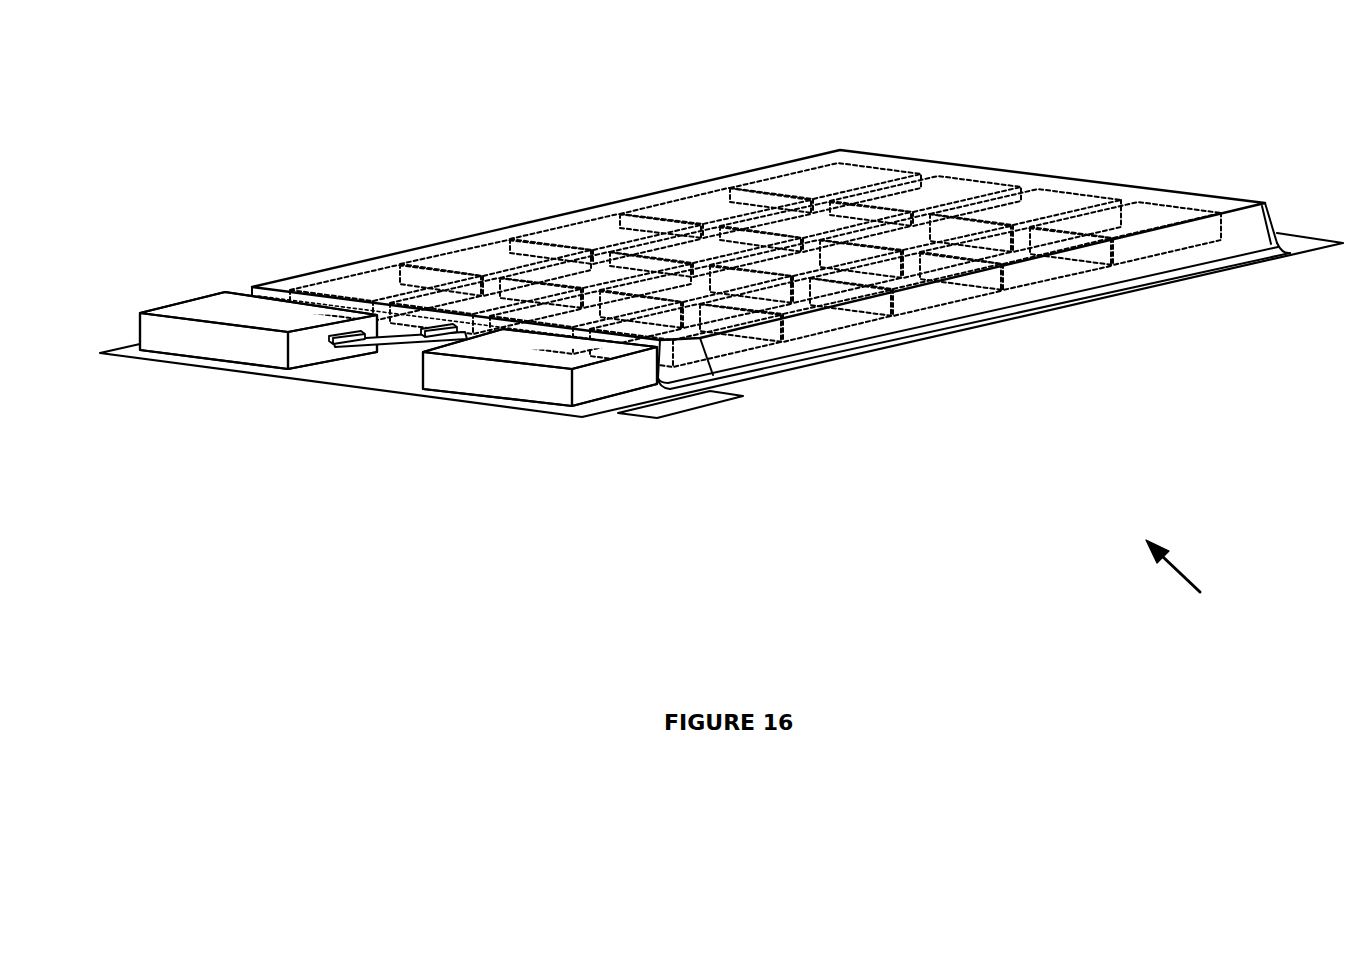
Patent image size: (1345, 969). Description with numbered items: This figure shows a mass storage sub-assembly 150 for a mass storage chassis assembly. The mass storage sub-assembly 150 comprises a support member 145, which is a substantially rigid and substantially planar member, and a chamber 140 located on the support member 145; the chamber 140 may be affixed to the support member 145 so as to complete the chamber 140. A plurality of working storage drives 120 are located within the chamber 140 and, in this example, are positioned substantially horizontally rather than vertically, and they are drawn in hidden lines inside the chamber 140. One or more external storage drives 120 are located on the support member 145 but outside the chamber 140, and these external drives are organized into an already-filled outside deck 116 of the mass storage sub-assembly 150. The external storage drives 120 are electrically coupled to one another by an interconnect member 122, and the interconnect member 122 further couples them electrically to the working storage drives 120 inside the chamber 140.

The outside deck 116 is at (703, 409).
The storage drive 120 is at (168, 416).
The interconnect member 122 is at (380, 352).
The chamber 140 is at (1192, 193).
The support member 145 is at (900, 343).
The mass storage sub-assembly 150 is at (1196, 581).